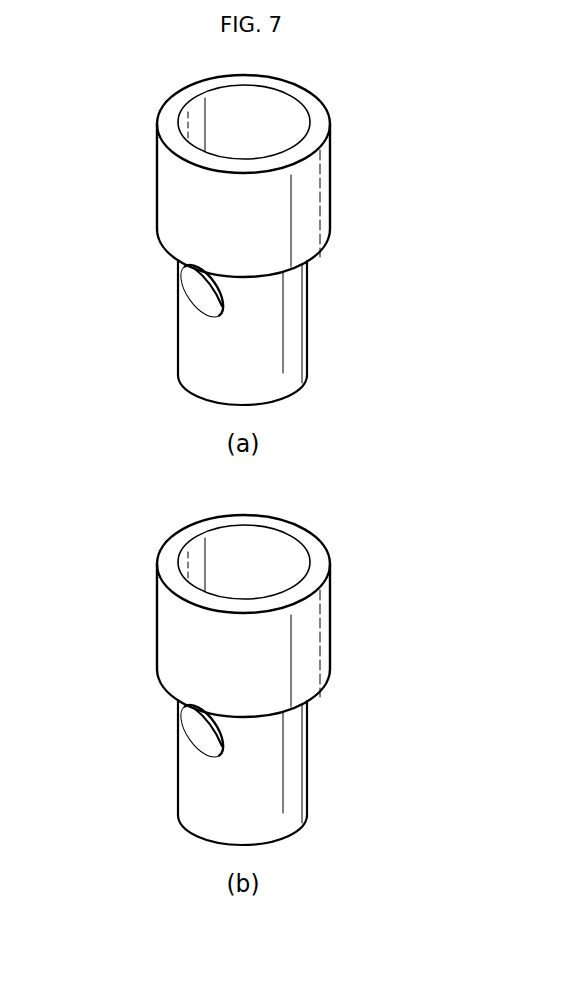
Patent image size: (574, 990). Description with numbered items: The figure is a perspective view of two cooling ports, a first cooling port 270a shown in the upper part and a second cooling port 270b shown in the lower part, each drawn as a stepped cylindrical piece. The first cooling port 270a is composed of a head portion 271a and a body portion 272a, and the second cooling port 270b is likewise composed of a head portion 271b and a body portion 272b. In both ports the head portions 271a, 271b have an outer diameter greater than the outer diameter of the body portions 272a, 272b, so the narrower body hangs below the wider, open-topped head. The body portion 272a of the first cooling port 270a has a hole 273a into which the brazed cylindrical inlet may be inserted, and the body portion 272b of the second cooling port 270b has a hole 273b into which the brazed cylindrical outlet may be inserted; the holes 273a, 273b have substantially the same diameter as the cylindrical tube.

The first cooling port 270a is at (124, 130).
The head portion 271a is at (332, 186).
The body portion 272a is at (312, 313).
The hole 273a is at (202, 287).
The second cooling port 270b is at (124, 570).
The head portion 271b is at (332, 626).
The body portion 272b is at (312, 753).
The hole 273b is at (202, 727).